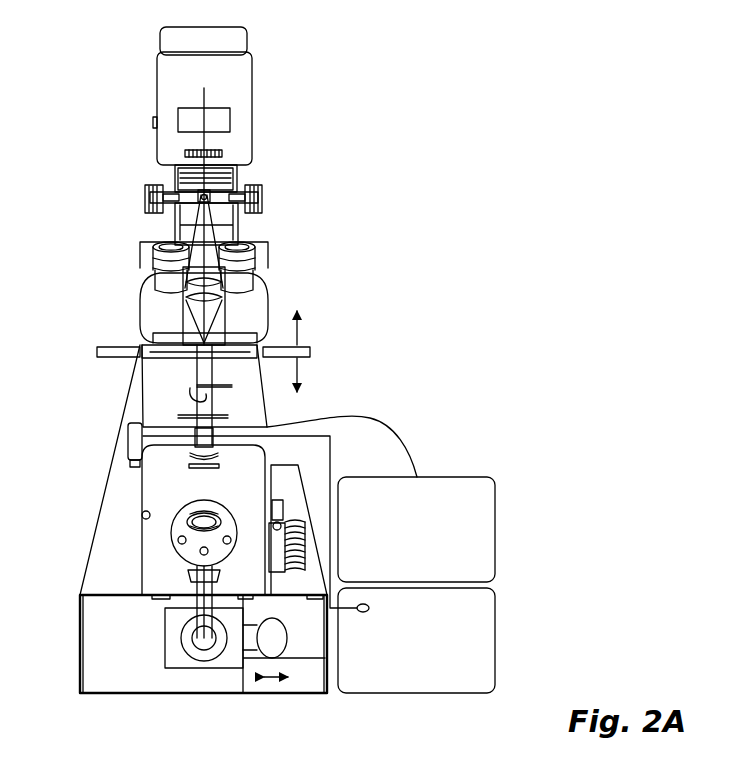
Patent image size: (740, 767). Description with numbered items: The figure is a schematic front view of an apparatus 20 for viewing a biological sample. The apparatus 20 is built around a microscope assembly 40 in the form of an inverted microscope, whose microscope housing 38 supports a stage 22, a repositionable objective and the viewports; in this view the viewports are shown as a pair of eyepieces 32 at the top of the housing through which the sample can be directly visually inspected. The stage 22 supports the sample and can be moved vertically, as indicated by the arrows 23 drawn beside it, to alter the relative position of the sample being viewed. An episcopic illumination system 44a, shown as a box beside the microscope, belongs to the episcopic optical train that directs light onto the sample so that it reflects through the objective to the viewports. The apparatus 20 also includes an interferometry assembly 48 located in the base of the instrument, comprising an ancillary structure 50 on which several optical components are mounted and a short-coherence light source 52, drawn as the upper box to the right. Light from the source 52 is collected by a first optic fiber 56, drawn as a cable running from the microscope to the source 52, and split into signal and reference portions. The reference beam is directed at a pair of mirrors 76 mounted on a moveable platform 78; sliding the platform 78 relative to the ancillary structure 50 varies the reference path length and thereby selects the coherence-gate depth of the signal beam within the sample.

The apparatus 20 is at (445, 100).
The stage 22 is at (112, 346).
The arrows 23 is at (299, 324).
The eyepiece 32 is at (257, 268).
The microscope housing 38 is at (127, 393).
The microscope assembly 40 is at (106, 484).
The episcopic illumination system 44a is at (435, 694).
The interferometry assembly 48 is at (79, 640).
The ancillary structure 50 is at (110, 695).
The short-coherence light source 52 is at (488, 522).
The first optic fiber 56 is at (397, 420).
The mirrors 76 is at (273, 656).
The moveable platform 78 is at (307, 686).